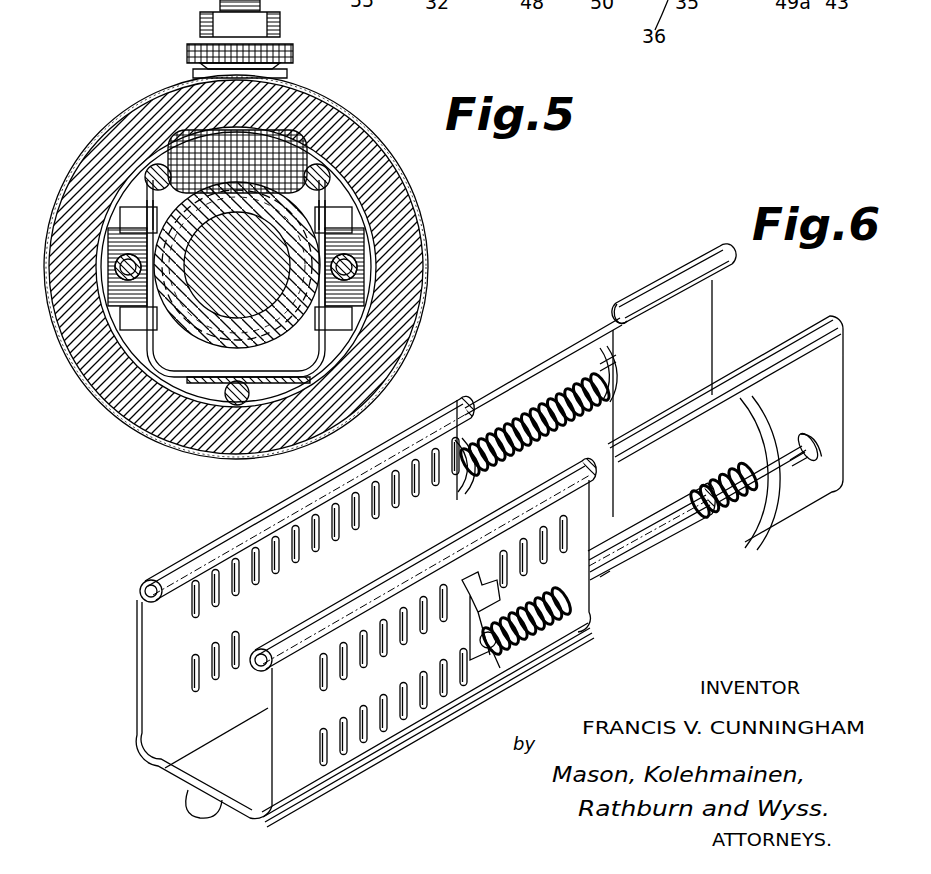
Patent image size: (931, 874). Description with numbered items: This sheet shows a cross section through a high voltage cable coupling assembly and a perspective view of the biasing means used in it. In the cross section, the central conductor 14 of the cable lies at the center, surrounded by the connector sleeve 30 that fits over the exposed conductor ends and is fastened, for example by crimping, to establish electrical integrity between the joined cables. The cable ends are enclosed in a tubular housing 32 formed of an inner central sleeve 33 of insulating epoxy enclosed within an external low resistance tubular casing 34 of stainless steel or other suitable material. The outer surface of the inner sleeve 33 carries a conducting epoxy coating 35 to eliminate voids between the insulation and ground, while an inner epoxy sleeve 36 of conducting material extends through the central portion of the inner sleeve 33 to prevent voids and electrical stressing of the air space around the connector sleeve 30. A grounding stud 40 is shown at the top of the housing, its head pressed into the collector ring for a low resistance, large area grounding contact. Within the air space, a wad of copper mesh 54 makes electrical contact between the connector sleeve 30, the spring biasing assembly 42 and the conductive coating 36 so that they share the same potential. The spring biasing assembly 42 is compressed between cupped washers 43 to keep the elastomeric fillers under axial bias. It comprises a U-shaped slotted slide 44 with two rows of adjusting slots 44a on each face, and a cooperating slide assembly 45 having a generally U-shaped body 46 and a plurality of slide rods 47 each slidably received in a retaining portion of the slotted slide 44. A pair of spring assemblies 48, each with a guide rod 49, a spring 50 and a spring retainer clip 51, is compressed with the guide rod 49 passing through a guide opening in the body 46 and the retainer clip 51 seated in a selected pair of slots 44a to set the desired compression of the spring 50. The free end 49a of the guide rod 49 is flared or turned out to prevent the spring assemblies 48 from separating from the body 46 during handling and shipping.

In FIG. 5, the central conductor 14 is at (252, 318).
In FIG. 5, the connector sleeve 30 is at (202, 348).
In FIG. 5, the tubular housing 32 is at (98, 411).
In FIG. 5, the inner central sleeve 33 is at (297, 95).
In FIG. 5, the tubular casing 34 is at (118, 425).
In FIG. 5, the conducting epoxy coating 35 is at (335, 112).
In FIG. 5, the inner epoxy sleeve 36 is at (148, 432).
In FIG. 5, the grounding stud 40 is at (222, 6).
In FIG. 5, the spring biasing assembly 42 is at (140, 347).
In FIG. 6, the spring biasing assembly 42 is at (700, 616).
In FIG. 5, the cupped washer 43 is at (205, 395).
In FIG. 5, the slotted slide 44 is at (330, 345).
In FIG. 6, the slotted slide 44 is at (136, 680).
In FIG. 5, the adjusting slots 44a is at (125, 228).
In FIG. 6, the adjusting slots 44a is at (215, 658).
In FIG. 6, the slide assembly 45 is at (662, 291).
In FIG. 6, the body 46 is at (833, 366).
In FIG. 5, the slide rods 47 is at (150, 172).
In FIG. 6, the slide rods 47 is at (567, 350).
In FIG. 5, the spring assemblies 48 is at (114, 265).
In FIG. 6, the spring assemblies 48 is at (502, 465).
In FIG. 5, the guide rod 49 is at (128, 282).
In FIG. 6, the guide rod 49 is at (512, 445).
In FIG. 6, the free end 49a is at (816, 443).
In FIG. 5, the spring 50 is at (110, 272).
In FIG. 6, the spring 50 is at (523, 410).
In FIG. 5, the spring retainer clip 51 is at (122, 215).
In FIG. 6, the spring retainer clip 51 is at (348, 570).
In FIG. 5, the wad of copper mesh 54 is at (190, 152).